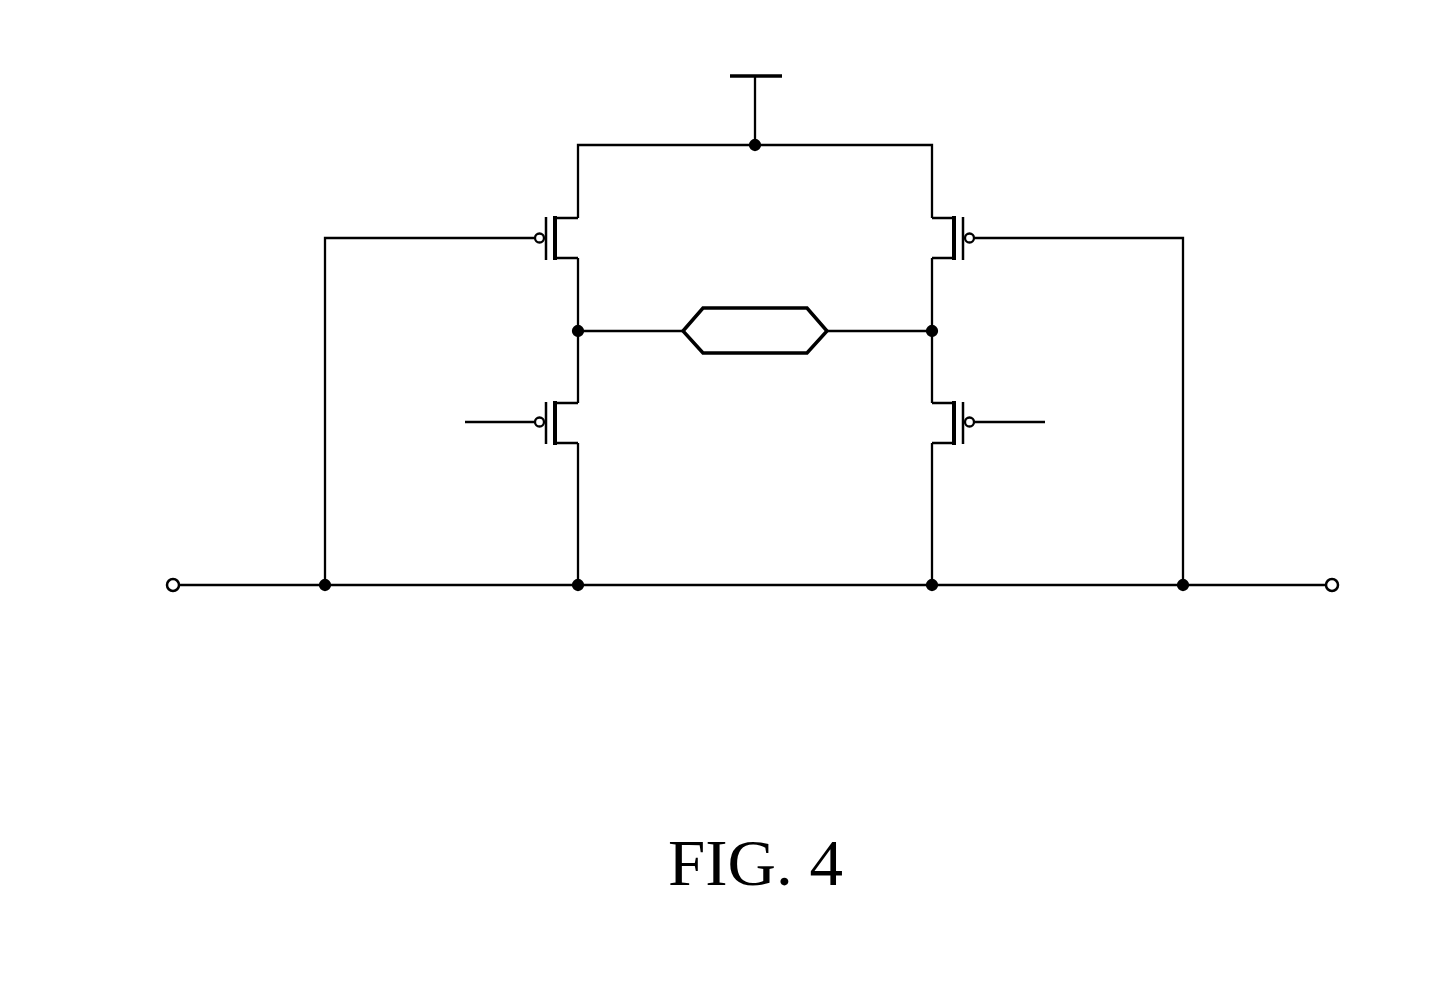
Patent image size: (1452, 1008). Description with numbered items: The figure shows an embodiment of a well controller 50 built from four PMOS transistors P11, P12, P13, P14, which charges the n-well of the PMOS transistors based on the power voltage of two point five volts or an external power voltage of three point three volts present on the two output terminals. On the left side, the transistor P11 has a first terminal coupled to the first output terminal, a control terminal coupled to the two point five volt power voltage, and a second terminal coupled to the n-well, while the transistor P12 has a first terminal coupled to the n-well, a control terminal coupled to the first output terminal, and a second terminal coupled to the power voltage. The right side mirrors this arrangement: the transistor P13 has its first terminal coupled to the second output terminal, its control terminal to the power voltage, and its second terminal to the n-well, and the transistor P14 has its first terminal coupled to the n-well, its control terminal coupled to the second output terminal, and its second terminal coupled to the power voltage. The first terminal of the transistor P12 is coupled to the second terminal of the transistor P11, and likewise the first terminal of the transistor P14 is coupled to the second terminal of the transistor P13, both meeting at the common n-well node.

The well controller 50 is at (757, 396).
The transistor P11 is at (516, 423).
The transistor P12 is at (593, 238).
The transistor P13 is at (992, 423).
The transistor P14 is at (918, 238).